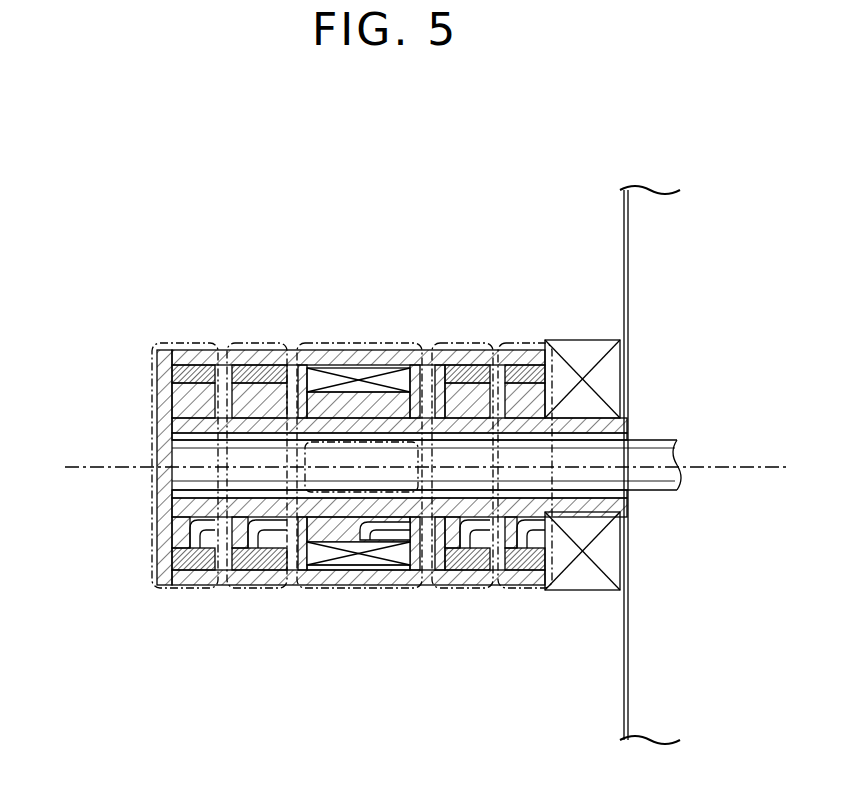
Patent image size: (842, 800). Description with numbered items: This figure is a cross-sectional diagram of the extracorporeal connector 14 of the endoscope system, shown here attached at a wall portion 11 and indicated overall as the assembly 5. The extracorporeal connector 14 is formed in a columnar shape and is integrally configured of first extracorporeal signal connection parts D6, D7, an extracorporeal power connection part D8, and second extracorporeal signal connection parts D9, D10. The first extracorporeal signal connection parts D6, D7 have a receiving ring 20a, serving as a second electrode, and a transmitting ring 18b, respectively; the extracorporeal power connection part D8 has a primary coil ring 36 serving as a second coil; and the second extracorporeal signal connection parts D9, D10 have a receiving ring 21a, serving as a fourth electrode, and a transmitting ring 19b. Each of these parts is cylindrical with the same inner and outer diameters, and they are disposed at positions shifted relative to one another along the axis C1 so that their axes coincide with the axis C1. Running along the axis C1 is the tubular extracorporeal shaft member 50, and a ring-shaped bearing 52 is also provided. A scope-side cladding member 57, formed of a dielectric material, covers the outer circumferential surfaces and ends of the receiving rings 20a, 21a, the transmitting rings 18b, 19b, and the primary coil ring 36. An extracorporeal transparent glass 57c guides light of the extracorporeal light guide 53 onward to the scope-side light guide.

The motor 5 is at (676, 185).
The wall portion 11 is at (624, 215).
The extracorporeal connector 14 is at (150, 344).
The second extracorporeal signal connection part D10 is at (192, 343).
The first extracorporeal signal connection part D7 is at (262, 343).
The extracorporeal power connection part D8 is at (362, 343).
The second extracorporeal signal connection part D9 is at (468, 343).
The first extracorporeal signal connection part D6 is at (520, 343).
The extracorporeal light guide 53 is at (660, 452).
The axis C1 is at (693, 467).
The extracorporeal shaft member 50 is at (622, 510).
The bearing 52 is at (622, 572).
The extracorporeal transparent glass 57c is at (160, 485).
The scope-side cladding member 57 is at (162, 515).
The transmitting ring 19b is at (197, 578).
The transmitting ring 18b is at (258, 578).
The primary coil ring 36 is at (358, 580).
The receiving ring 21a is at (470, 578).
The receiving ring 20a is at (523, 578).